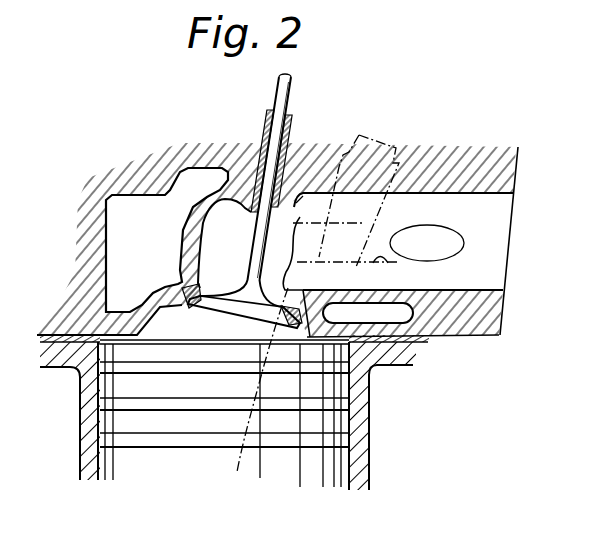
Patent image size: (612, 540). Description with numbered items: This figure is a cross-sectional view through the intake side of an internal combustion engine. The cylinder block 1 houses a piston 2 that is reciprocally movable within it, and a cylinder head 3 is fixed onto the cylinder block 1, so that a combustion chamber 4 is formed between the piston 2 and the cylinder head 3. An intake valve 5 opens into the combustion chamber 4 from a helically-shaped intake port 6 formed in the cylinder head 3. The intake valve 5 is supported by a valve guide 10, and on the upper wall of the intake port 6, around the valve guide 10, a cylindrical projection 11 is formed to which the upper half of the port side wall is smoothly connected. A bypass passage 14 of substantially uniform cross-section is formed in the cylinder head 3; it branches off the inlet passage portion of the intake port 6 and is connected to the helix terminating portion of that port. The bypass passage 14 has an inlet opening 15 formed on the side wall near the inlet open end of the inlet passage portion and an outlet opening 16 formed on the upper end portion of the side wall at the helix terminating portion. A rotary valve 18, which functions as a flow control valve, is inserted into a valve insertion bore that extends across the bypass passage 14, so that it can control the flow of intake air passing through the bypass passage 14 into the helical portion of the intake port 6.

The cylinder block 1 is at (82, 427).
The piston 2 is at (132, 458).
The cylinder head 3 is at (97, 257).
The combustion chamber 4 is at (177, 334).
The intake valve 5 is at (247, 243).
The helically-shaped intake port 6 is at (401, 208).
The valve guide 10 is at (290, 122).
The cylindrical projection 11 is at (313, 208).
The bypass passage 14 is at (395, 264).
The inlet opening 15 is at (455, 252).
The outlet opening 16 is at (257, 396).
The rotary valve 18 is at (383, 141).